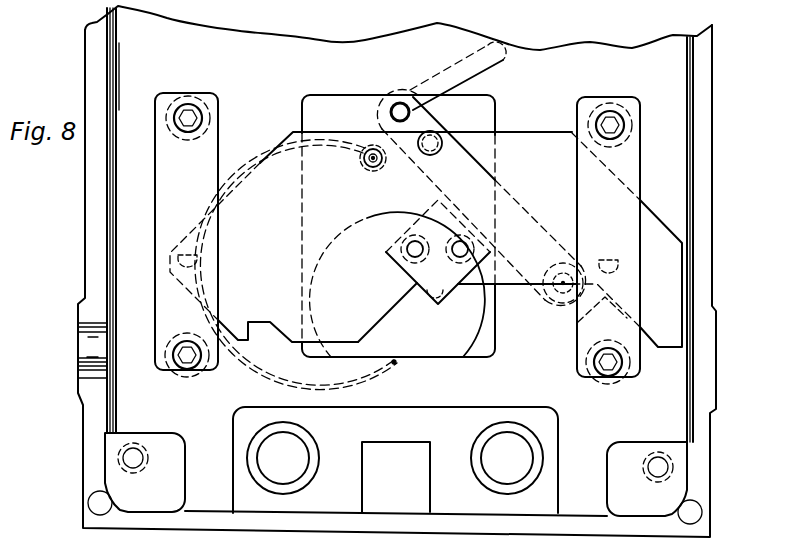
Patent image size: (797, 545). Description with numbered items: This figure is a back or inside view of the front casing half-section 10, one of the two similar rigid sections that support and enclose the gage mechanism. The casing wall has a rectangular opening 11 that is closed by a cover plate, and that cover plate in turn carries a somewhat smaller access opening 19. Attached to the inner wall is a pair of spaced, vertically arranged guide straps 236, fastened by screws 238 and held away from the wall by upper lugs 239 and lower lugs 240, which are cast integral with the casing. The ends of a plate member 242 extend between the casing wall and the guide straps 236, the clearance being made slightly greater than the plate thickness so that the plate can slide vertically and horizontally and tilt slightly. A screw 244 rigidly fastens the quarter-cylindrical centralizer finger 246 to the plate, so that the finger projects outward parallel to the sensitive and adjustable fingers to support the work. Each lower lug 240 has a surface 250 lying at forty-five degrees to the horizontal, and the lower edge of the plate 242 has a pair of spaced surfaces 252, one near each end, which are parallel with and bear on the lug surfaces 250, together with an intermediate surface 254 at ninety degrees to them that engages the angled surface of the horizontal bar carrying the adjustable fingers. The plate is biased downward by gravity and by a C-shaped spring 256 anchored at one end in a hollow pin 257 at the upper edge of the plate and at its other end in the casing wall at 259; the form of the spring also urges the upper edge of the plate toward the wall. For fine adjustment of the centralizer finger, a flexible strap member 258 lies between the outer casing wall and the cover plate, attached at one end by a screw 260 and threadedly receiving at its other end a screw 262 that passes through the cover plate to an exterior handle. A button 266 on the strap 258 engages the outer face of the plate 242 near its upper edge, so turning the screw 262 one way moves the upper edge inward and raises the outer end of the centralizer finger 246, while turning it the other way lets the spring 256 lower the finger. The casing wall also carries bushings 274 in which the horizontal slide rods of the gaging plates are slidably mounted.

The front casing half-section 10 is at (713, 200).
The rectangular opening 11 is at (489, 330).
The access opening 19 is at (470, 345).
The guide strap 236 is at (155, 231).
The screw 238 is at (201, 85).
The upper lug 239 is at (211, 120).
The lower lug 240 is at (166, 348).
The plate member 242 is at (538, 121).
The screw 244 is at (455, 250).
The centralizer finger 246 is at (443, 297).
The lug surface 250 is at (198, 302).
The spaced surface 252 is at (236, 336).
The intermediate surface 254 is at (378, 316).
The C-shaped spring 256 is at (273, 379).
The hollow pin 257 is at (366, 167).
The flexible strap member 258 is at (441, 119).
The spring anchor point 259 is at (395, 365).
The screw 260 is at (563, 262).
The screw 262 is at (403, 101).
The button 266 is at (427, 157).
The bushing 274 is at (316, 450).